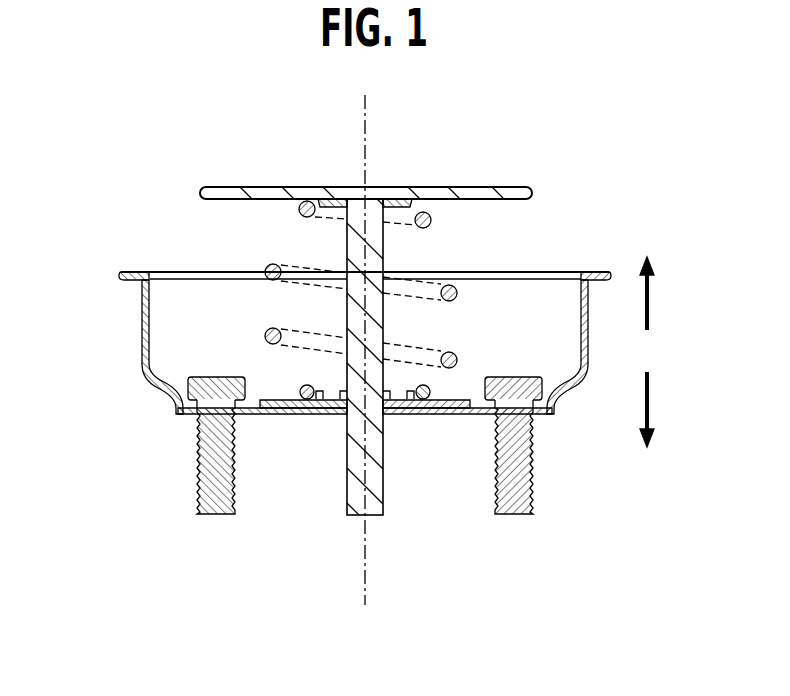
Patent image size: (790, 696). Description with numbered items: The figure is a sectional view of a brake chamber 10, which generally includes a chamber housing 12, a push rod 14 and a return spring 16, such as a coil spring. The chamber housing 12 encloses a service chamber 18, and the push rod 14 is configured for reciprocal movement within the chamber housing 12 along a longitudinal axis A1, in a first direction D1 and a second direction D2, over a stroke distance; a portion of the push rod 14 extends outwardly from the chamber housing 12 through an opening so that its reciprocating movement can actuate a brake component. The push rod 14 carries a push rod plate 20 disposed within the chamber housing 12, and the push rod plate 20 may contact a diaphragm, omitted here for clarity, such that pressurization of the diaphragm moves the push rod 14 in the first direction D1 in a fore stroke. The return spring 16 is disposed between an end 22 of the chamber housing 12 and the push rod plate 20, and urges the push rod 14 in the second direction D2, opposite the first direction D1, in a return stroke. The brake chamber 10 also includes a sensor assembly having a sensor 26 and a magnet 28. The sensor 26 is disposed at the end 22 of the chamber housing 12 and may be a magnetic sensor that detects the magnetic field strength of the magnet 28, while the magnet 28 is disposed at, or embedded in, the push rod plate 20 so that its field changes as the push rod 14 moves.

The brake chamber 10 is at (148, 163).
The chamber housing 12 is at (168, 311).
The push rod 14 is at (350, 477).
The return spring 16 is at (265, 338).
The service chamber 18 is at (195, 310).
The push rod plate 20 is at (494, 187).
The end 22 is at (425, 416).
The sensor 26 is at (408, 416).
The magnet 28 is at (417, 204).
The longitudinal axis A1 is at (366, 152).
The first direction D1 is at (664, 409).
The second direction D2 is at (664, 293).